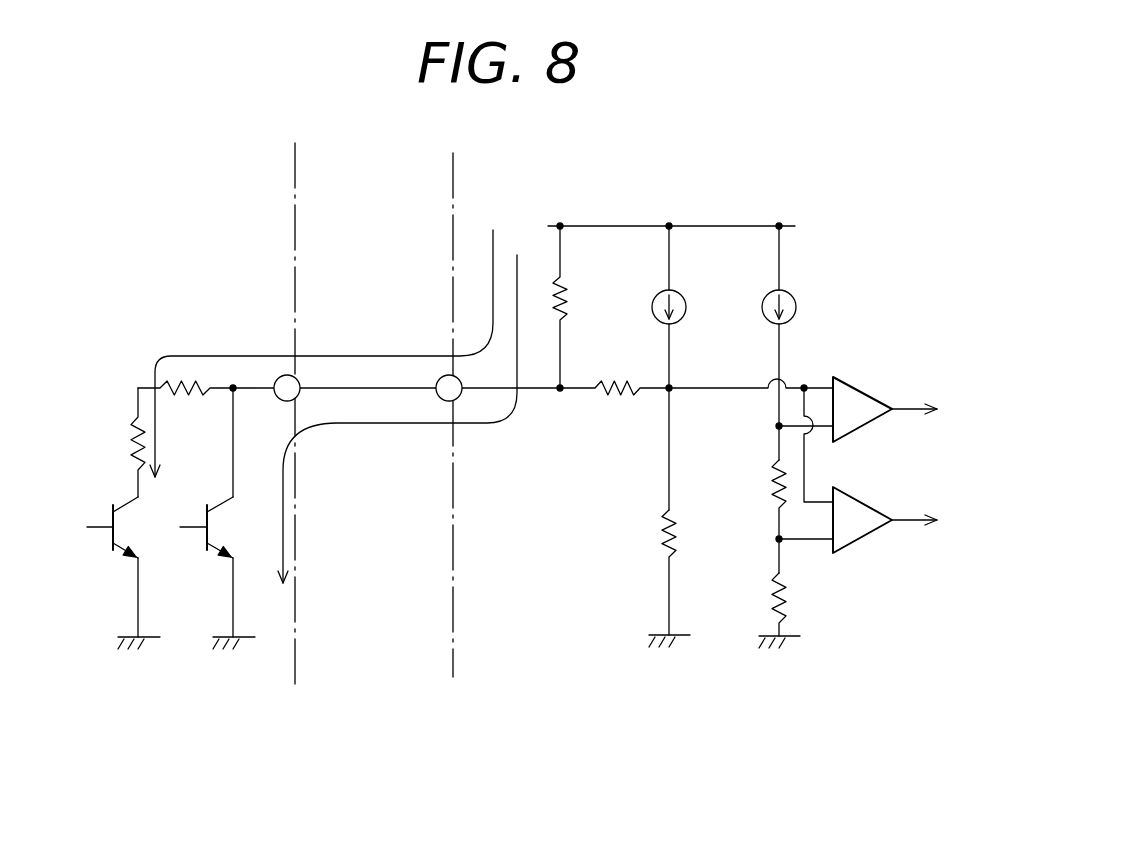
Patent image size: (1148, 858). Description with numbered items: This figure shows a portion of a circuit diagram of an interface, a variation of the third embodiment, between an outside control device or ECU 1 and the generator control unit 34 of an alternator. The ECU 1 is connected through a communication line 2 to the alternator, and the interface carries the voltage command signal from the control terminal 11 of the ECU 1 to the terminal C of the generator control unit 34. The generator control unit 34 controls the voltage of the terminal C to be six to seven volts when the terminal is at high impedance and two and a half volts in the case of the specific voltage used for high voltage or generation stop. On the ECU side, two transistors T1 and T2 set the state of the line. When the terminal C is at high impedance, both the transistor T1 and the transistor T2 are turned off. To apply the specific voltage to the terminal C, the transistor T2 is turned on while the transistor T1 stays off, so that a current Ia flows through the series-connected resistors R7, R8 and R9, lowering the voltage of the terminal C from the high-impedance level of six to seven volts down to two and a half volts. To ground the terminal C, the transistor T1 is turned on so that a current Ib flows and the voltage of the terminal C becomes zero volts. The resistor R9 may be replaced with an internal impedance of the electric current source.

The ECU 1 is at (267, 414).
The communication line 2 is at (354, 390).
The control terminal 11 is at (299, 380).
The terminal C is at (442, 378).
The generator control unit 34 is at (735, 389).
The resistor R7 is at (569, 296).
The resistor R8 is at (189, 394).
The resistor R9 is at (134, 446).
The transistor T1 is at (205, 505).
The transistor T2 is at (111, 505).
The current Ia is at (321, 353).
The current Ib is at (397, 419).